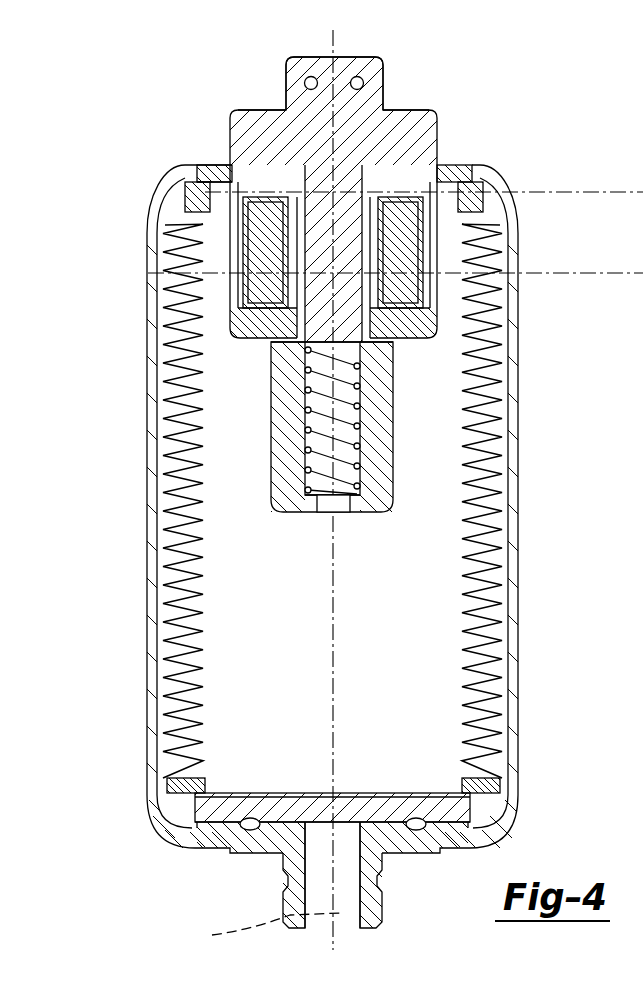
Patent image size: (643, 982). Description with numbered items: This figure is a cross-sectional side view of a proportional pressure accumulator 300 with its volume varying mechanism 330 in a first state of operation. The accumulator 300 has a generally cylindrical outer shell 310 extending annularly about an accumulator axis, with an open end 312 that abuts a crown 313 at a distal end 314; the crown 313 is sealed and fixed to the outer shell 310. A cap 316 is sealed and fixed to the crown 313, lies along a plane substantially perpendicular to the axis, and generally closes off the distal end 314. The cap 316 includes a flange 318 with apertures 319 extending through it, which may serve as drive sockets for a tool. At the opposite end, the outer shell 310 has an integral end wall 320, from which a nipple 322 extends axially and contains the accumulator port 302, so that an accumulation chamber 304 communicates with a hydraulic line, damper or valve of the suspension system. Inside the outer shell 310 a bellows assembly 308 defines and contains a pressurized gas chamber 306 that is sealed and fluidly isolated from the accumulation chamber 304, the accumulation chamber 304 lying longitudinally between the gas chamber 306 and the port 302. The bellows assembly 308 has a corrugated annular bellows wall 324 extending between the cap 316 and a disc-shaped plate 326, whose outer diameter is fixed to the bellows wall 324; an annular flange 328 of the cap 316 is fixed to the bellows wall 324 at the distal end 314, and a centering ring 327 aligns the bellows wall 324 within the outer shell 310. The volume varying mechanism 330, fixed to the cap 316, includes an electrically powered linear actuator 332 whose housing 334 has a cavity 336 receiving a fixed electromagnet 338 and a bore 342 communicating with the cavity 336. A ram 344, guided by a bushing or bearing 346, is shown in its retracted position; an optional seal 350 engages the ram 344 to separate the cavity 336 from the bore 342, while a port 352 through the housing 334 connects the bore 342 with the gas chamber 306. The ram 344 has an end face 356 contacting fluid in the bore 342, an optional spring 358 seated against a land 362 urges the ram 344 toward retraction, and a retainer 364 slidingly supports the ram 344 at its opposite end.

The proportional pressure accumulator 300 is at (523, 88).
The accumulator port 302 is at (353, 890).
The accumulation chamber 304 is at (518, 815).
The pressurized gas chamber 306 is at (462, 438).
The bellows assembly 308 is at (150, 528).
The outer shell 310 is at (156, 424).
The open end 312 is at (145, 233).
The crown 313 is at (160, 205).
The distal end 314 is at (503, 143).
The cap 316 is at (205, 172).
The flange 318 is at (380, 92).
The apertures 319 is at (304, 80).
The end wall 320 is at (255, 847).
The nipple 322 is at (290, 897).
The annular bellows wall 324 is at (500, 790).
The plate 326 is at (320, 793).
The centering ring 327 is at (175, 789).
The annular flange 328 is at (472, 185).
The volume varying mechanism 330 is at (252, 108).
The electrically powered linear actuator 332 is at (234, 231).
The housing 334 is at (236, 296).
The cavity 336 is at (410, 290).
The electromagnet 338 is at (405, 240).
The bore 342 is at (300, 440).
The ram 344 is at (320, 262).
The bushing or bearing 346 is at (300, 325).
The seal 350 is at (330, 400).
The port 352 is at (340, 512).
The end face 356 is at (372, 350).
The spring 358 is at (322, 462).
The land 362 is at (360, 490).
The retainer 364 is at (292, 135).